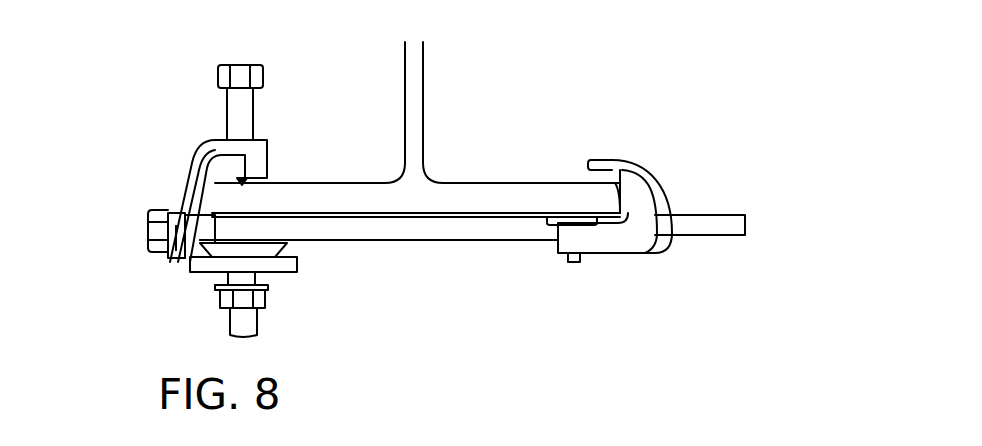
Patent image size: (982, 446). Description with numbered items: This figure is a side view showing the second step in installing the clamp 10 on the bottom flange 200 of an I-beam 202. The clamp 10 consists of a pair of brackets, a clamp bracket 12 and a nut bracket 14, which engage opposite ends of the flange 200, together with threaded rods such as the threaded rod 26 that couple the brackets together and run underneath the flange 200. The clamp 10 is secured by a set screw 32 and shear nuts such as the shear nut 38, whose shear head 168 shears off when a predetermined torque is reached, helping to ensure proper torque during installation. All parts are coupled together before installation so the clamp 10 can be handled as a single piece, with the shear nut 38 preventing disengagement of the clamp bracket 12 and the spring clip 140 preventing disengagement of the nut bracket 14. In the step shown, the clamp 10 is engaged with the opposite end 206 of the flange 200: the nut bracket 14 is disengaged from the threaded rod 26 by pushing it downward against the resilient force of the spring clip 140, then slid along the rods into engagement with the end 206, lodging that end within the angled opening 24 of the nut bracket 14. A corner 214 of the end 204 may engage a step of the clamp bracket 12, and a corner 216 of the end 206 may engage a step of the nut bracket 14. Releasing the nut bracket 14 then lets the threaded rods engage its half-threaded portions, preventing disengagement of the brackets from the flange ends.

The clamp 10 is at (153, 120).
The clamp bracket 12 is at (165, 176).
The nut bracket 14 is at (673, 172).
The angled opening 24 is at (580, 171).
The threaded rod 26 is at (423, 227).
The set screw 32 is at (243, 108).
The shear nut 38 is at (177, 237).
The spring clip 140 is at (577, 222).
The shear head 168 is at (150, 232).
The flange 200 is at (413, 195).
The I-beam 202 is at (448, 93).
The end 204 is at (228, 205).
The opposite end 206 is at (598, 201).
The corner 214 is at (225, 195).
The corner 216 is at (613, 190).